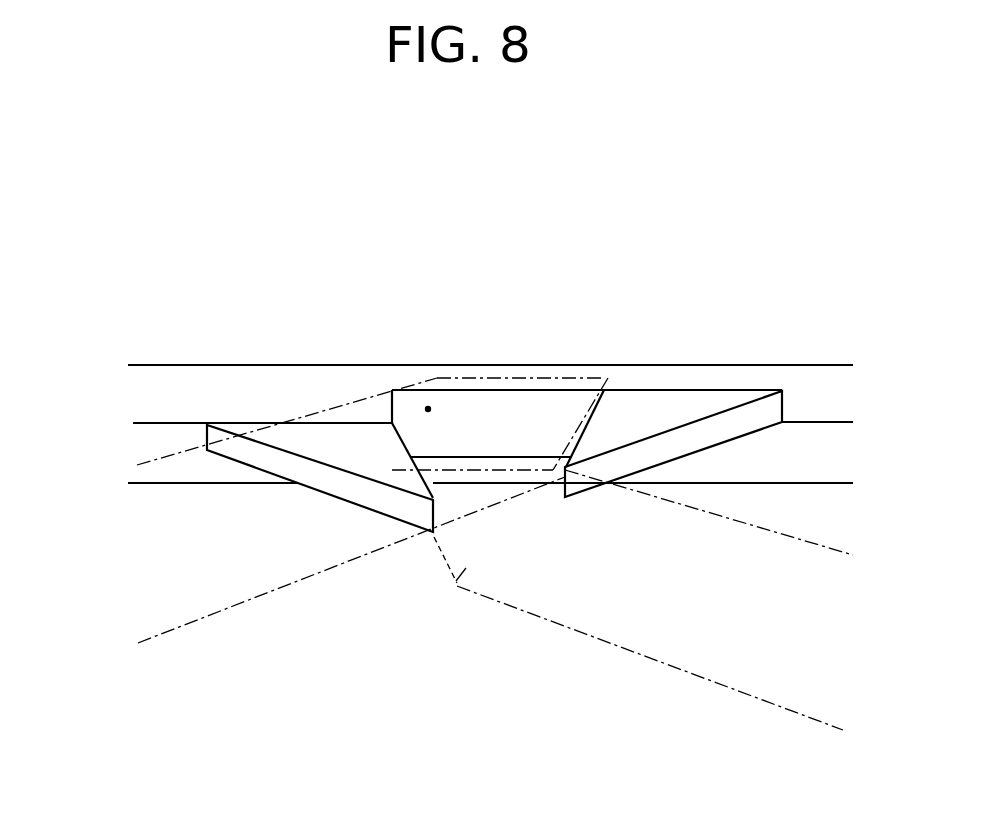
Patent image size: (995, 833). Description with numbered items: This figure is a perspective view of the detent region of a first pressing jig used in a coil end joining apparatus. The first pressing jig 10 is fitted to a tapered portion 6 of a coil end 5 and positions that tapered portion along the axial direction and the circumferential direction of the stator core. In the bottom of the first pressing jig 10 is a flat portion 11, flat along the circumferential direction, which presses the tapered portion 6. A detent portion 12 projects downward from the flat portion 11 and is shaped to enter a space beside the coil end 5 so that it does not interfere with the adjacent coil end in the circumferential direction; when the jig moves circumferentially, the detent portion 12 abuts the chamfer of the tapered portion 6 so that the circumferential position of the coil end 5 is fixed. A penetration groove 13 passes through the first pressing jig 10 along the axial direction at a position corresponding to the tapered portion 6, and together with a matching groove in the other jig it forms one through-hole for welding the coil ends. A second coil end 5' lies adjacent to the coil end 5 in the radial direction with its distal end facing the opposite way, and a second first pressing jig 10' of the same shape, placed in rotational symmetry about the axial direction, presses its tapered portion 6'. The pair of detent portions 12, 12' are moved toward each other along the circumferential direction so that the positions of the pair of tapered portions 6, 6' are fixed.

The coil end 5 is at (351, 572).
The coil end 5' is at (650, 670).
The tapered portion 6 is at (472, 564).
The tapered portion 6' is at (433, 585).
The first pressing jig 10 is at (490, 333).
The first pressing jig 10' is at (718, 512).
The flat portion 11 is at (502, 386).
The detent portion 12 is at (673, 376).
The detent portion 12' is at (320, 415).
The penetration groove 13 is at (428, 405).